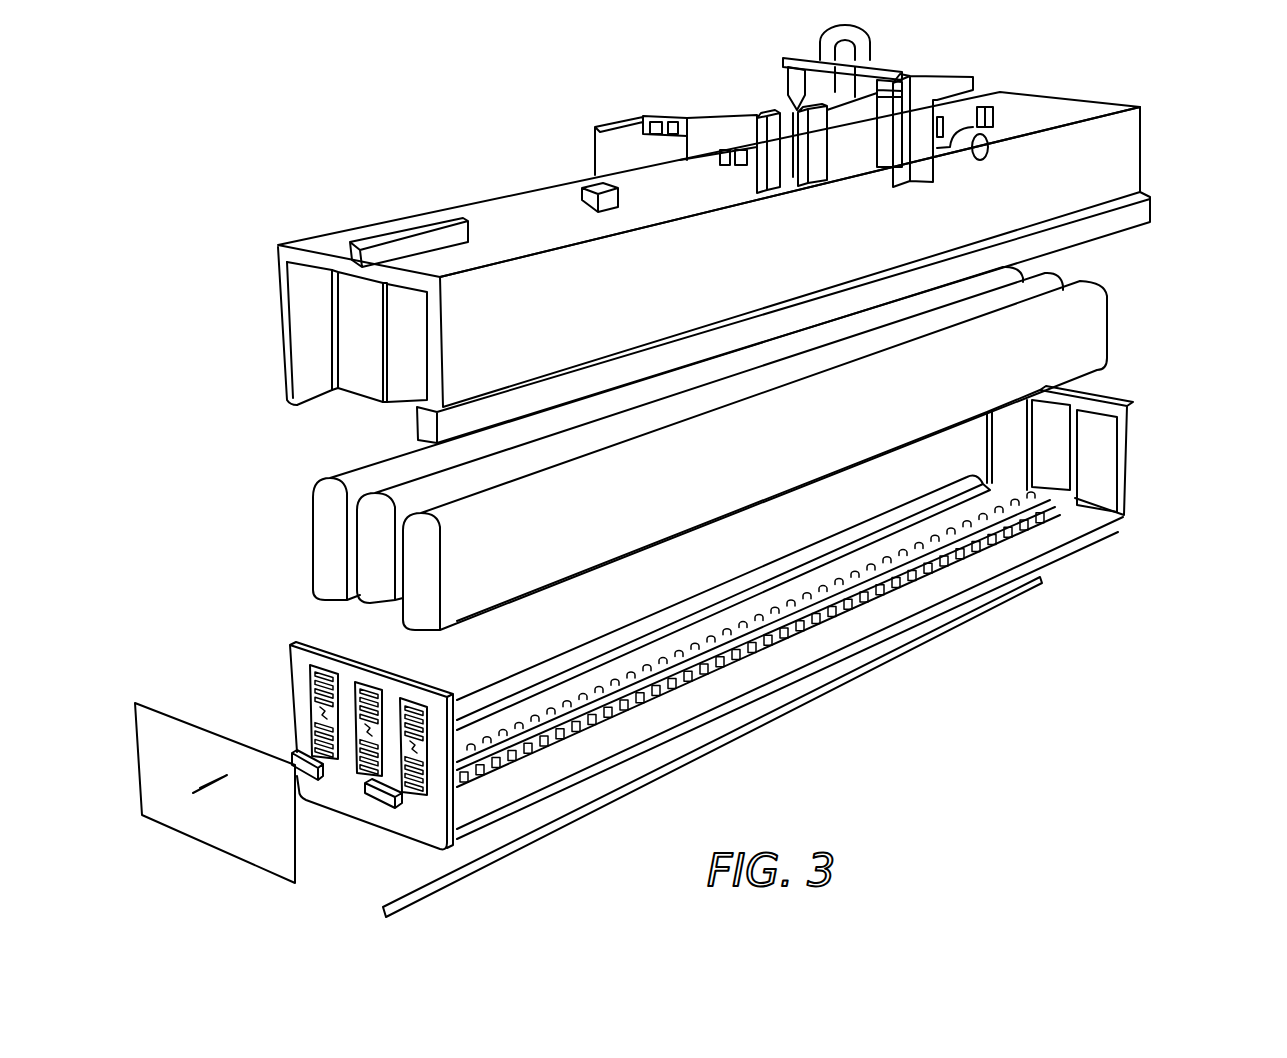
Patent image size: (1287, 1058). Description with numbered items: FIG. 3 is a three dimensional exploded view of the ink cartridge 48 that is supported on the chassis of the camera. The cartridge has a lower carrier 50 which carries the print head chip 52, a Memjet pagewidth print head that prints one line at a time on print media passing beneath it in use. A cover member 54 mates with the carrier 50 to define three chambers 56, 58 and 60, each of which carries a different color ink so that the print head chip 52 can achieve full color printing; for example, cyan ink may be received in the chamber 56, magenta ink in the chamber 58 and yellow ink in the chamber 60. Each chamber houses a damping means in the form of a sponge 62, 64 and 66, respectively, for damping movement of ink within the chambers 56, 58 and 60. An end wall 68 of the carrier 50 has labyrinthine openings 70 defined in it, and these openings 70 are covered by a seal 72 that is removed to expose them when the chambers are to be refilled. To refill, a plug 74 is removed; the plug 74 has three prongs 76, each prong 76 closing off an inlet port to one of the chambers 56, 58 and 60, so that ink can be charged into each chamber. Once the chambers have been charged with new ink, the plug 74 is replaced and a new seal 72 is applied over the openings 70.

The ink cartridge 48 is at (1149, 289).
The lower carrier 50 is at (1127, 490).
The print head chip 52 is at (880, 670).
The cover member 54 is at (1140, 156).
The chamber 56 is at (300, 321).
The chamber 58 is at (374, 366).
The chamber 60 is at (413, 340).
The sponge 62 is at (317, 493).
The sponge 64 is at (373, 568).
The sponge 66 is at (428, 608).
The end wall 68 is at (354, 732).
The labyrinthine openings 70 is at (363, 673).
The seal 72 is at (213, 847).
The plug 74 is at (861, 44).
The prongs 76 is at (795, 90).